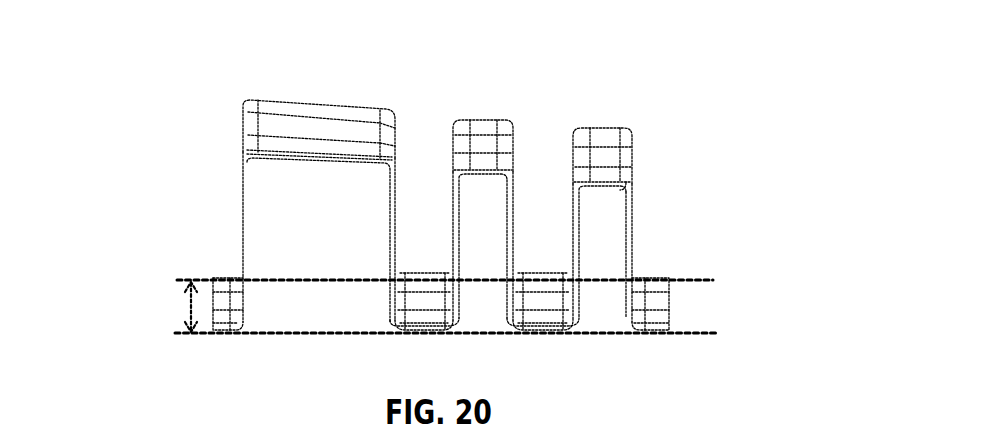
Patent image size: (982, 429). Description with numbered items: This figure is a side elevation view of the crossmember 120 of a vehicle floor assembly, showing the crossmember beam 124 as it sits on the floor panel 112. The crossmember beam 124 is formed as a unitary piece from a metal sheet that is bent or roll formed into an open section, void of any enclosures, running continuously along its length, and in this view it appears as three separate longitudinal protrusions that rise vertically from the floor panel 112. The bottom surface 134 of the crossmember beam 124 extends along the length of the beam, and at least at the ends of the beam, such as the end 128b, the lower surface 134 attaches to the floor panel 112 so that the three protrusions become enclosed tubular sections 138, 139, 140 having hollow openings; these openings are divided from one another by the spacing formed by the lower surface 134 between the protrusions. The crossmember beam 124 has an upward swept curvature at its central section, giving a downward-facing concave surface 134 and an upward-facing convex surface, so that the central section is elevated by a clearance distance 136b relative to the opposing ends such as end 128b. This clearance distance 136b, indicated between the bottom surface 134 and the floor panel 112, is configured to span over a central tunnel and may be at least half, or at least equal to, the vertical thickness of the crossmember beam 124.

The crossmember 120 is at (491, 181).
The crossmember beam 124 is at (618, 157).
The opposing end of the crossmember beam 128b is at (632, 233).
The bottom surface of the crossmember beam 134 is at (703, 280).
The clearance distance 136b is at (190, 306).
The tubular section 138 is at (270, 199).
The tubular section 139 is at (483, 192).
The tubular section 140 is at (617, 220).
The floor panel 112 is at (327, 334).